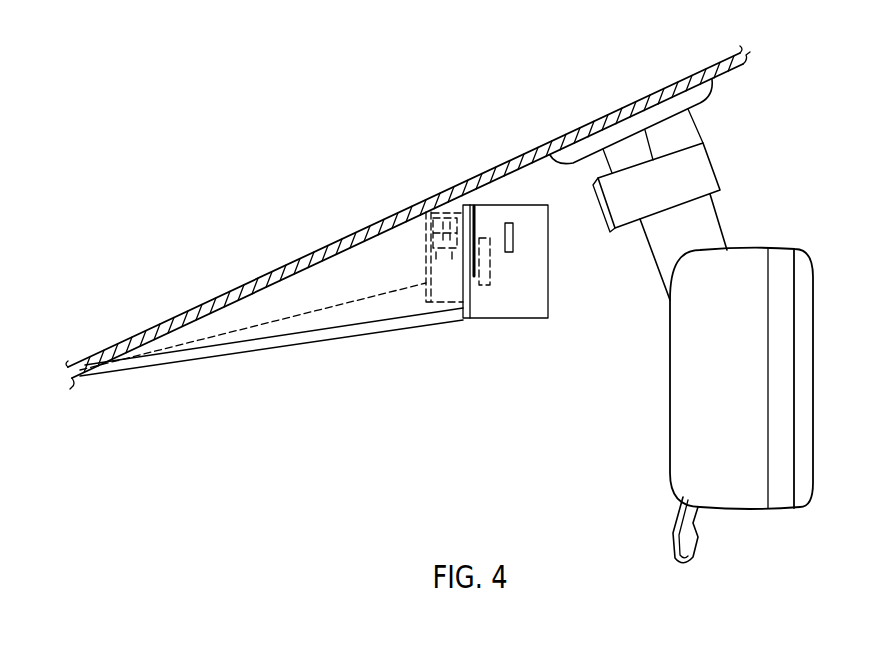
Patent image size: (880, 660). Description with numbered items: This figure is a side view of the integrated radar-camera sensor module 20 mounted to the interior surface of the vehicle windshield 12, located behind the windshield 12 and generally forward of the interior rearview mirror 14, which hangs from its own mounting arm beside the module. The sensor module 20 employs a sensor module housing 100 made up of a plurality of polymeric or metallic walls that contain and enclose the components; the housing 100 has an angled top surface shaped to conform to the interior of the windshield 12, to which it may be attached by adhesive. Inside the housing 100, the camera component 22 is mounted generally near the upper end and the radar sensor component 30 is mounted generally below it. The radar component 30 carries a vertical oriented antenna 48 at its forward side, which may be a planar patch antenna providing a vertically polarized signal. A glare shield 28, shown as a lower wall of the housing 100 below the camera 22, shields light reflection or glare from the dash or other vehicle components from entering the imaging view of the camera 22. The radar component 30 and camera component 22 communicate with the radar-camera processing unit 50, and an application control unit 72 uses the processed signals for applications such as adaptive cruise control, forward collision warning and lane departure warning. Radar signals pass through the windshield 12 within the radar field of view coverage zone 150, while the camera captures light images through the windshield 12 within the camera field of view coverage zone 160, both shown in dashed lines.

The windshield 12 is at (132, 336).
The interior rearview mirror 14 is at (692, 438).
The integrated radar-camera sensor module 20 is at (584, 283).
The camera component 22 is at (447, 192).
The glare shield 28 is at (195, 361).
The radar sensor component 30 is at (432, 257).
The vertical oriented antenna 48 is at (433, 262).
The radar-camera processing unit 50 is at (484, 286).
The application control unit 72 is at (514, 238).
The sensor module housing 100 is at (236, 353).
The radar field of view horizontal coverage zone 150 is at (330, 312).
The camera field of view horizontal coverage zone 160 is at (371, 228).